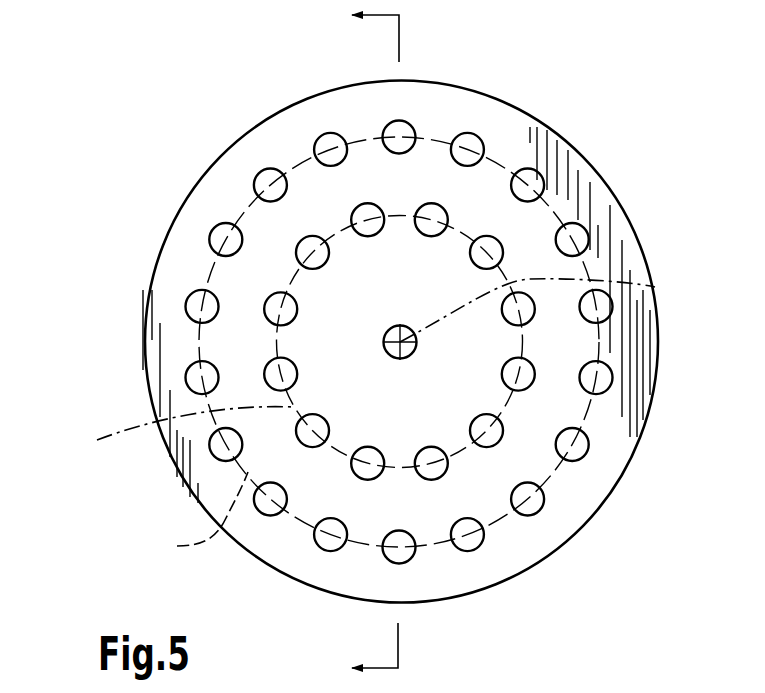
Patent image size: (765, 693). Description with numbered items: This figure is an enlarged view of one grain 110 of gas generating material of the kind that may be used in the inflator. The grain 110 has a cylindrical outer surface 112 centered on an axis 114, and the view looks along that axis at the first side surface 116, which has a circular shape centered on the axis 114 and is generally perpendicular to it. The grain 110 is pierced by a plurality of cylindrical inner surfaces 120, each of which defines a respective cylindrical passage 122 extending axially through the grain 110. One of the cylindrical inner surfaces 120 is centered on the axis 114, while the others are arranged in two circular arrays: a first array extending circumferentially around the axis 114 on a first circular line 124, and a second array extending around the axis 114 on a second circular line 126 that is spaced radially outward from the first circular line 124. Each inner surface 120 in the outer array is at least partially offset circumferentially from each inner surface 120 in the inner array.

The grain 110 is at (137, 110).
The cylindrical outer surface 112 is at (347, 86).
The axis 114 is at (655, 287).
The first side surface 116 is at (226, 180).
The cylindrical inner surfaces 120 is at (197, 300).
The cylindrical passage 122 is at (217, 222).
The first circular line 124 is at (171, 432).
The second circular line 126 is at (190, 515).